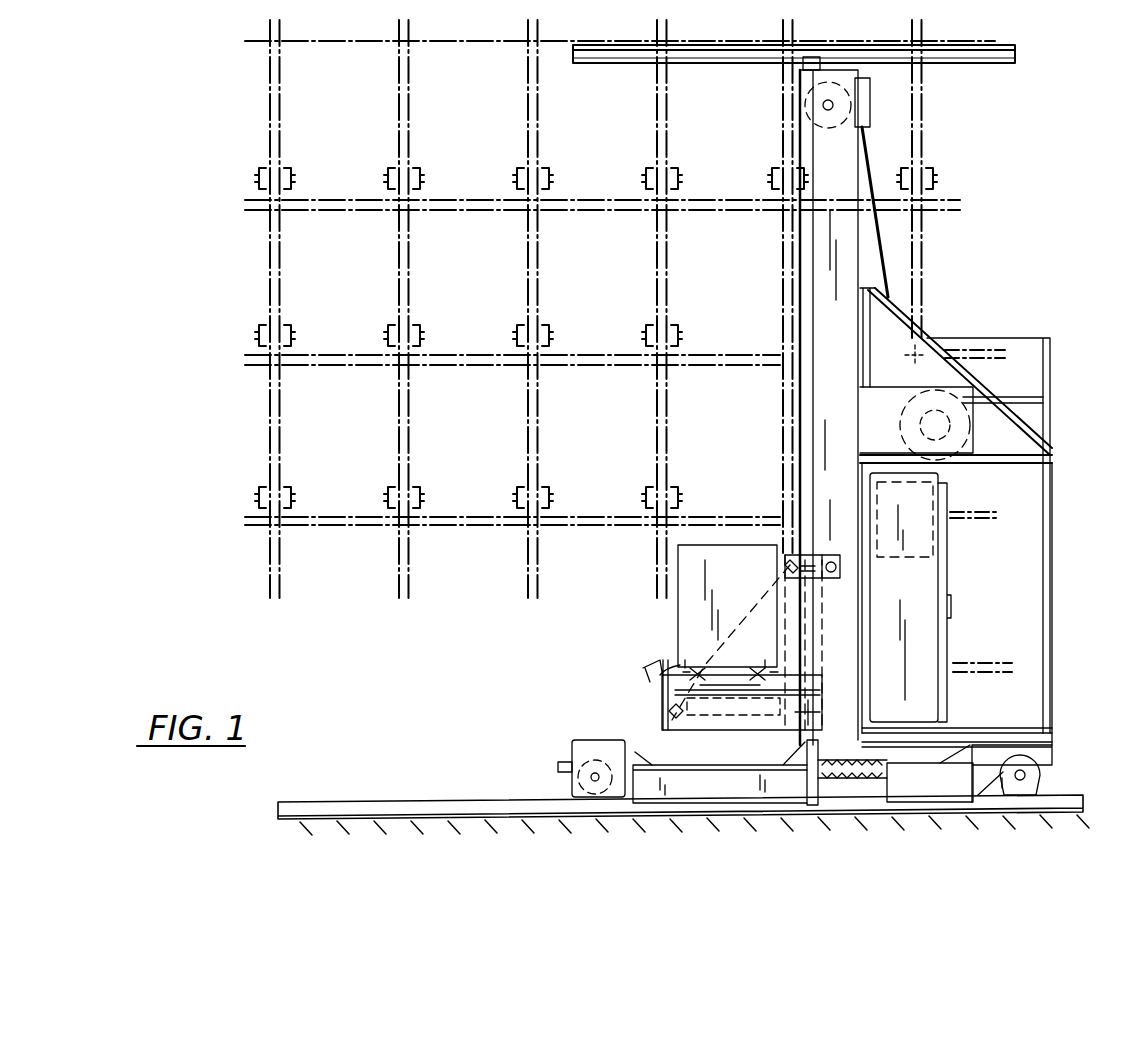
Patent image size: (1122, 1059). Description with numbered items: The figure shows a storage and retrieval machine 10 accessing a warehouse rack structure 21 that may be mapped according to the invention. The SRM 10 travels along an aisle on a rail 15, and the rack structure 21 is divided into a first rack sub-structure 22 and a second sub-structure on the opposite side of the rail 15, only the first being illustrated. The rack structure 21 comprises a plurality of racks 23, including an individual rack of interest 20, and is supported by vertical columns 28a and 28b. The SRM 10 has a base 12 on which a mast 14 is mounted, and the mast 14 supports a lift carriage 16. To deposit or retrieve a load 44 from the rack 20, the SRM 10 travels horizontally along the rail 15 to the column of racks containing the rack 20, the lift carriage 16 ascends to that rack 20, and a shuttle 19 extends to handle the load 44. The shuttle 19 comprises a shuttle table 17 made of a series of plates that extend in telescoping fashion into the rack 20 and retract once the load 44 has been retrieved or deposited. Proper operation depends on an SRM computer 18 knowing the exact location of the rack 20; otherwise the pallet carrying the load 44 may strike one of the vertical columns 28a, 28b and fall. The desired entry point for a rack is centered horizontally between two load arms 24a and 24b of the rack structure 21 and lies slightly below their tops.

The storage and retrieval machine 10 is at (814, 431).
The base 12 is at (928, 792).
The mast 14 is at (850, 391).
The rail 15 is at (1067, 793).
The lift carriage 16 is at (658, 702).
The shuttle table 17 is at (680, 665).
The SRM computer 18 is at (940, 503).
The shuttle 19 is at (745, 620).
The rack of interest 20 is at (577, 212).
The rack structure 21 is at (600, 18).
The first rack sub-structure 22 is at (622, 43).
The racks 23 is at (600, 366).
The load arm 24a is at (552, 165).
The load arm 24b is at (642, 170).
The vertical column 28a is at (540, 108).
The vertical column 28b is at (668, 100).
The load 44 is at (676, 576).